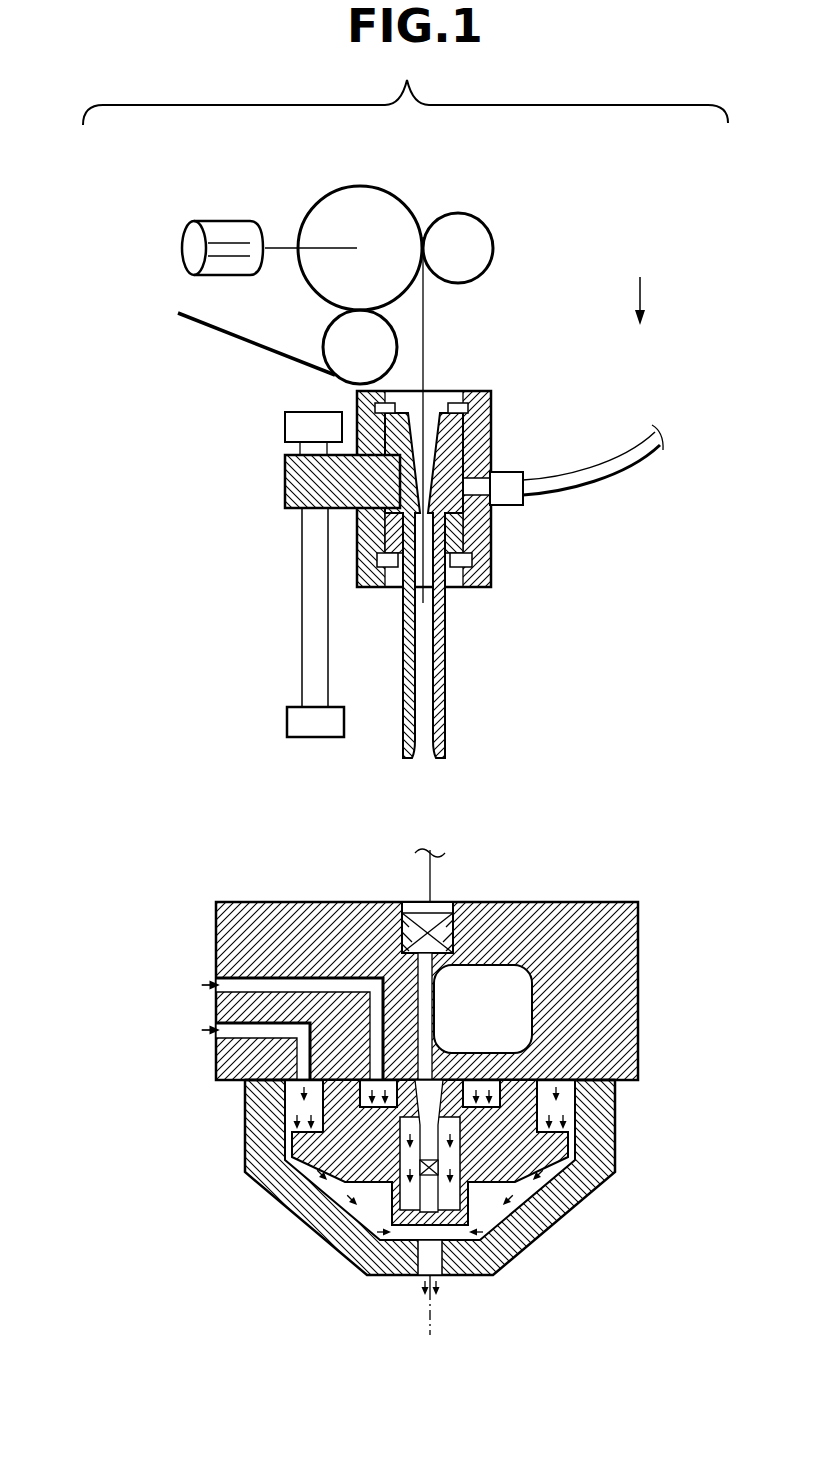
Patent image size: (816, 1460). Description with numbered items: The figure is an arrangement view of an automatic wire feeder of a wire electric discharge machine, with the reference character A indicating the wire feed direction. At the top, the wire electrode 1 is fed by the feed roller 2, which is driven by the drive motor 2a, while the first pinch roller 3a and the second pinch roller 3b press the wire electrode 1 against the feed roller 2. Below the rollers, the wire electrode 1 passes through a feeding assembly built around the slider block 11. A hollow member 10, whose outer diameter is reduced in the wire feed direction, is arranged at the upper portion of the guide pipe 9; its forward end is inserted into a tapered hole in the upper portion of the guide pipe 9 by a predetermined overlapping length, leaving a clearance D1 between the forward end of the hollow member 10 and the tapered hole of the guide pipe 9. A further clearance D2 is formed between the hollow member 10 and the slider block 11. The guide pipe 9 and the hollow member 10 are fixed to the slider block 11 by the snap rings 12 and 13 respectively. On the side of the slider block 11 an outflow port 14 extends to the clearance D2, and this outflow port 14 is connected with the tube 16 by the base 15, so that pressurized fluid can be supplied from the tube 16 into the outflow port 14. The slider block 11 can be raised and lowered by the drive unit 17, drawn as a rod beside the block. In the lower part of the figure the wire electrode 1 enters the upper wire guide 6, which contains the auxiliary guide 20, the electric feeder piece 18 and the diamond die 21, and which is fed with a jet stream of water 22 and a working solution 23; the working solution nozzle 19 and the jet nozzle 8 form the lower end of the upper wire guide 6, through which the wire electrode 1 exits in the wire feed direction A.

The wire electrode 1 is at (207, 320).
The feed roller 2 is at (327, 208).
The drive motor 2a is at (190, 230).
The first pinch roller 3a is at (337, 332).
The second pinch roller 3b is at (472, 225).
The wire feed direction A is at (653, 301).
The upper wire guide 6 is at (620, 938).
The jet nozzle 8 is at (528, 1243).
The guide pipe 9 is at (448, 690).
The hollow member 10 is at (480, 428).
The slider block 11 is at (285, 465).
The snap ring 12 is at (455, 567).
The snap ring 13 is at (455, 392).
The outflow port 14 is at (495, 513).
The base 15 is at (508, 505).
The tube 16 is at (610, 487).
The drive unit 17 is at (307, 642).
The electric feeder piece 18 is at (532, 1000).
The working solution nozzle 19 is at (580, 1183).
The auxiliary guide 20 is at (455, 930).
The diamond die 21 is at (420, 1183).
The jet stream of water 22 is at (256, 1026).
The working solution 23 is at (220, 1049).
The clearance D1 is at (413, 523).
The clearance D2 is at (403, 488).